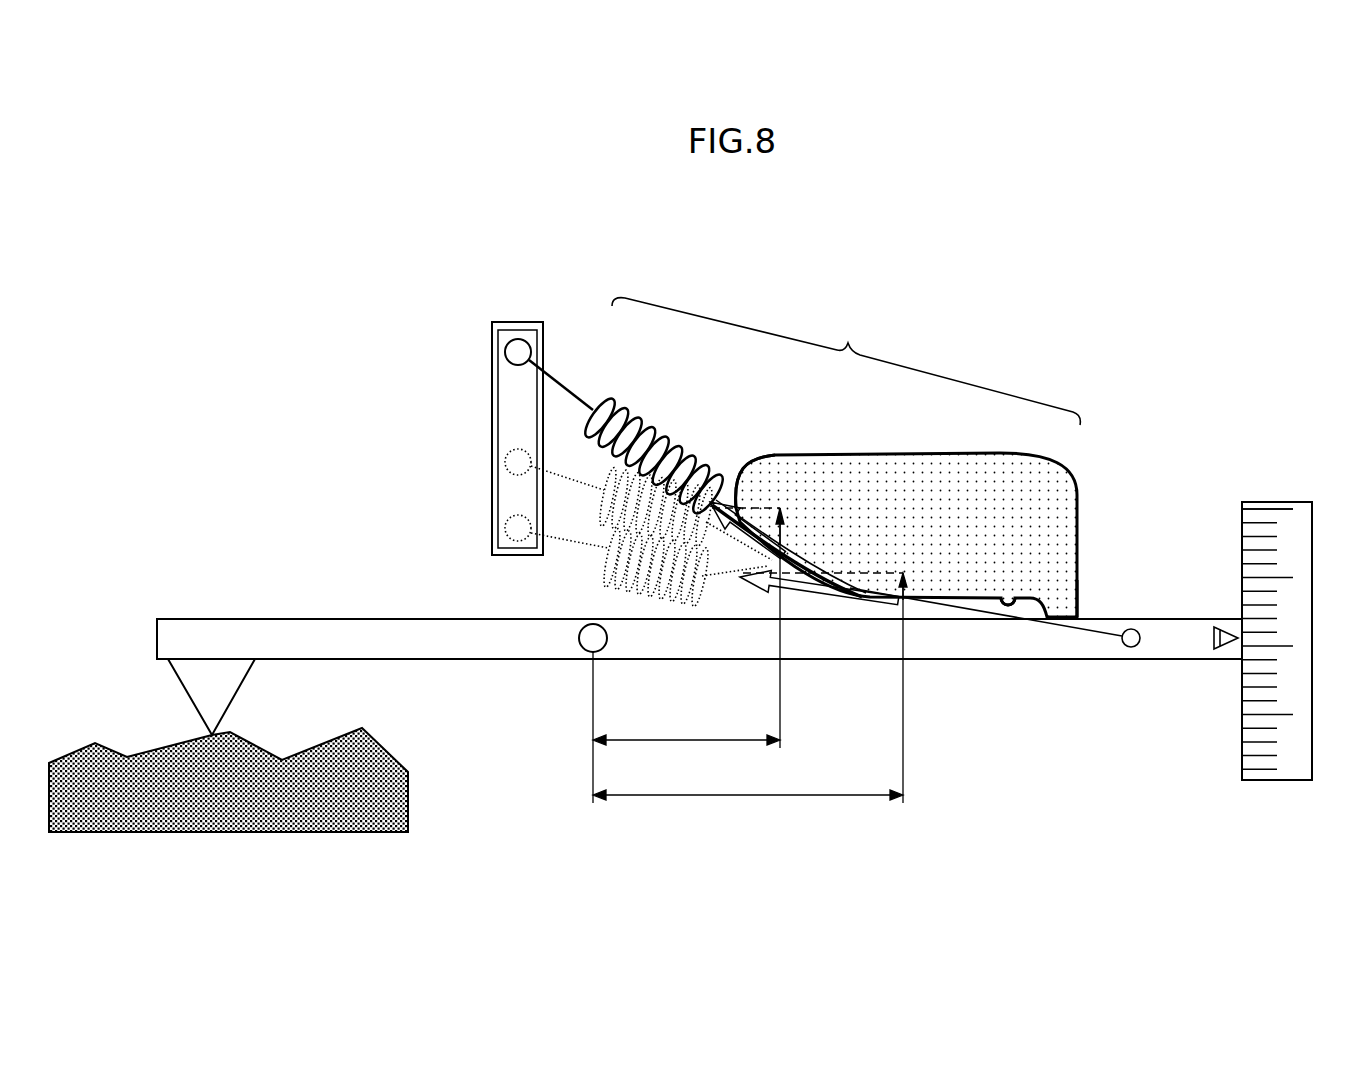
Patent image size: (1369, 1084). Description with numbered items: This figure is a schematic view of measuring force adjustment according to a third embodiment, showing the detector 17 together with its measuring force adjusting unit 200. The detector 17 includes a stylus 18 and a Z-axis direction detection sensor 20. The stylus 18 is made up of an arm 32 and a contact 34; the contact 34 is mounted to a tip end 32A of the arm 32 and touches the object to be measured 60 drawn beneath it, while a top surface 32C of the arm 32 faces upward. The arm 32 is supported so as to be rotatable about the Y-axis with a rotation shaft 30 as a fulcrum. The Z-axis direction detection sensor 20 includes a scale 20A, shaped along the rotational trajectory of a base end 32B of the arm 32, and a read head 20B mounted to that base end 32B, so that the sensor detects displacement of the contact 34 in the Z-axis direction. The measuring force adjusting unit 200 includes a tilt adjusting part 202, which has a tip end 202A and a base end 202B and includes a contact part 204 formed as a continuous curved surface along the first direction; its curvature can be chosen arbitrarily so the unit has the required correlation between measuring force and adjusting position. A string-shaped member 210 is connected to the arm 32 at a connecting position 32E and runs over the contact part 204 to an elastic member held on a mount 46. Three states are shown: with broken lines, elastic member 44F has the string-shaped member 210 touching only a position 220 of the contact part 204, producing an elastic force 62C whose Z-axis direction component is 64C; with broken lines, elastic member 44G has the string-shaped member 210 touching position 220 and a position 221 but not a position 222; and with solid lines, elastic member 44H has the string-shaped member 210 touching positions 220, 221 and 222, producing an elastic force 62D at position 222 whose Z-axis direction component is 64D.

The detector 17 is at (326, 328).
The stylus 18 is at (146, 632).
The Z-axis direction detection sensor 20 is at (1318, 441).
The scale 20A is at (1278, 500).
The read head 20B is at (1212, 638).
The rotation shaft 30 is at (593, 624).
The arm 32 is at (328, 600).
The tip end of the arm 32A is at (150, 668).
The base end of the arm 32B is at (1236, 668).
The beam top surface 32C is at (437, 619).
The connecting position 32E is at (1127, 647).
The contact 34 is at (238, 689).
The elastic member 44F is at (600, 537).
The elastic member 44G is at (600, 476).
The elastic member 44H is at (604, 385).
The spring mount 46 is at (518, 339).
The object to be measured 60 is at (230, 826).
The elastic force 62C is at (840, 600).
The elastic force 62D is at (740, 528).
The Z-axis direction component of the elastic force 64C is at (908, 591).
The Z-axis direction component of the elastic force 64D is at (790, 530).
The measuring force adjusting unit 200 is at (846, 361).
The tilt adjusting part 202 is at (905, 457).
The tip end of the tilt adjusting part 202A is at (749, 466).
The base end of the tilt adjusting part 202B is at (1090, 606).
The contact part 204 is at (1015, 603).
The string-shaped member 210 is at (966, 606).
The position of the contact part 220 is at (915, 608).
The position of the contact part 221 is at (832, 563).
The position of the contact part 222 is at (766, 563).